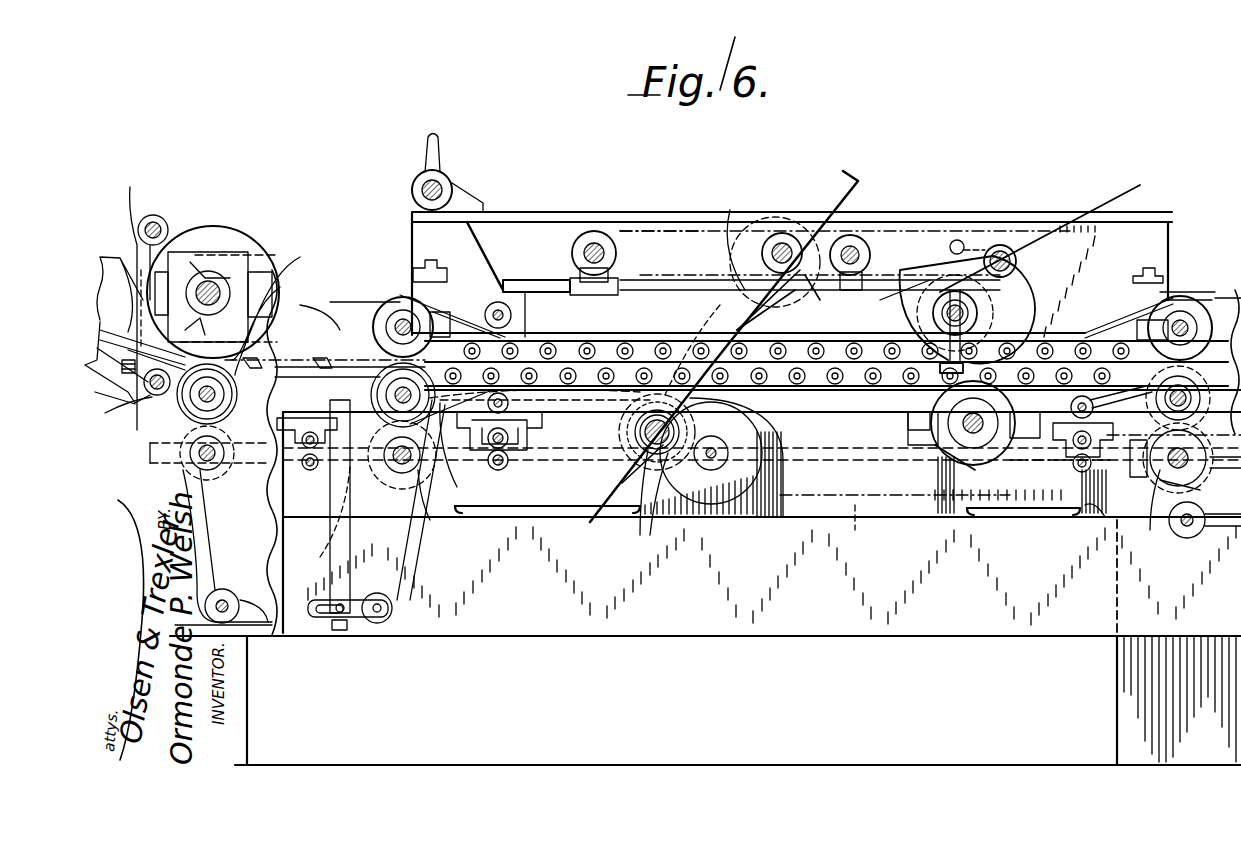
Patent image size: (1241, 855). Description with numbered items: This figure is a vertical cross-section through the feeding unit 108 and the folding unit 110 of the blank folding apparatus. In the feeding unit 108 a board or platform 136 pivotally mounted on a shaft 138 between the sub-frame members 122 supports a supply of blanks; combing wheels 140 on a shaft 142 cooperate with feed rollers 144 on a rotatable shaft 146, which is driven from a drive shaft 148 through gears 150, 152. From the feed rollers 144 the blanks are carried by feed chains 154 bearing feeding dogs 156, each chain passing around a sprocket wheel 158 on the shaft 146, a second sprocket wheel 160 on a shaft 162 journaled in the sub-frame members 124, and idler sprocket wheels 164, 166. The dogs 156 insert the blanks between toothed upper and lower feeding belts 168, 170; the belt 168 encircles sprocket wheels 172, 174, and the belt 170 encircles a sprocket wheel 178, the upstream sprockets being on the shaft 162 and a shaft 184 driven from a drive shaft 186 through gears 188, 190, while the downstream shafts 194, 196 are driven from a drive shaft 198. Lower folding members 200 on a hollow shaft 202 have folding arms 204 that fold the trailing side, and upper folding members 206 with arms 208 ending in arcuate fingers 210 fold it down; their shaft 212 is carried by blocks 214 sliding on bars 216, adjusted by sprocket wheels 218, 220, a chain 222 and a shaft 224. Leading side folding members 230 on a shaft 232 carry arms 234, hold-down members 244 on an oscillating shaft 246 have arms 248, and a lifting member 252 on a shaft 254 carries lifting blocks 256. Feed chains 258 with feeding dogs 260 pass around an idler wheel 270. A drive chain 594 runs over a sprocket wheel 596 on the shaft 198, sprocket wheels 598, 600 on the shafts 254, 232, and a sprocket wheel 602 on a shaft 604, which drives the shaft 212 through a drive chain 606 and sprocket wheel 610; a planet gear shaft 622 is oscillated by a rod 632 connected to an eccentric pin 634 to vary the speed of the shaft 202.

The feeding unit 108 is at (222, 222).
The folding unit 110 is at (862, 160).
The sub-frame members 122 is at (122, 176).
The sub-frame members 124 is at (490, 218).
The board or platform 136 is at (128, 262).
The shaft 138 is at (145, 395).
The combing wheels 140 is at (232, 272).
The shaft 142 is at (212, 290).
The feed rollers 144 is at (195, 455).
The rotatable shaft 146 is at (215, 395).
The drive shaft 148 is at (225, 458).
The gear 150 is at (215, 475).
The gear 152 is at (412, 395).
The feed chains 154 is at (205, 560).
The feeding dogs 156 is at (320, 356).
The sprocket wheel 158 is at (270, 252).
The second sprocket wheel 160 is at (346, 308).
The shaft 162 is at (450, 498).
The idler sprocket wheel 164 is at (395, 605).
The idler sprocket wheel 166 is at (262, 625).
The upper feeding belt 168 is at (445, 300).
The lower feeding belt 170 is at (470, 455).
The sprocket wheel 172 is at (432, 330).
The sprocket wheel 174 is at (1170, 312).
The sprocket wheel 178 is at (1170, 398).
The rotatable shaft 184 is at (400, 318).
The drive shaft 186 is at (400, 478).
The gear 188 is at (415, 472).
The gear 190 is at (425, 467).
The rotatable shaft 194 is at (1186, 318).
The rotatable shaft 196 is at (1160, 462).
The drive shaft 198 is at (1175, 478).
The lower folding members 200 is at (646, 507).
The hollow shaft 202 is at (632, 432).
The folding arms 204 is at (622, 504).
The upper folding members 206 is at (860, 285).
The arms 208 is at (840, 205).
The arcuate fingers 210 is at (845, 172).
The rotatable shaft 212 is at (782, 243).
The blocks 214 is at (900, 300).
The bars 216 is at (540, 292).
The sprocket wheel 218 is at (594, 232).
The sprocket wheel 220 is at (860, 245).
The chain 222 is at (648, 231).
The shaft 224 is at (584, 255).
The folding members 230 is at (975, 305).
The rotatable shaft 232 is at (985, 290).
The arms 234 is at (906, 417).
The hold-down members 244 is at (1003, 250).
The oscillating shaft 246 is at (1017, 258).
The arm 248 is at (950, 280).
The lifting member 252 is at (935, 455).
The rotatable shaft 254 is at (1100, 470).
The lifting blocks 256 is at (908, 430).
The feed chains 258 is at (1215, 540).
The feeding dogs 260 is at (1226, 283).
The idler wheel 270 is at (1186, 535).
The drive chain 594 is at (855, 530).
The sprocket wheel 596 is at (1100, 520).
The sprocket wheel 598 is at (935, 445).
The sprocket wheel 600 is at (975, 325).
The sprocket wheel 602 is at (748, 500).
The shaft 604 is at (710, 470).
The drive chain 606 is at (730, 215).
The sprocket wheel 610 is at (740, 228).
The planet gear shaft 622 is at (680, 360).
The rod 632 is at (535, 400).
The eccentric pin 634 is at (317, 517).